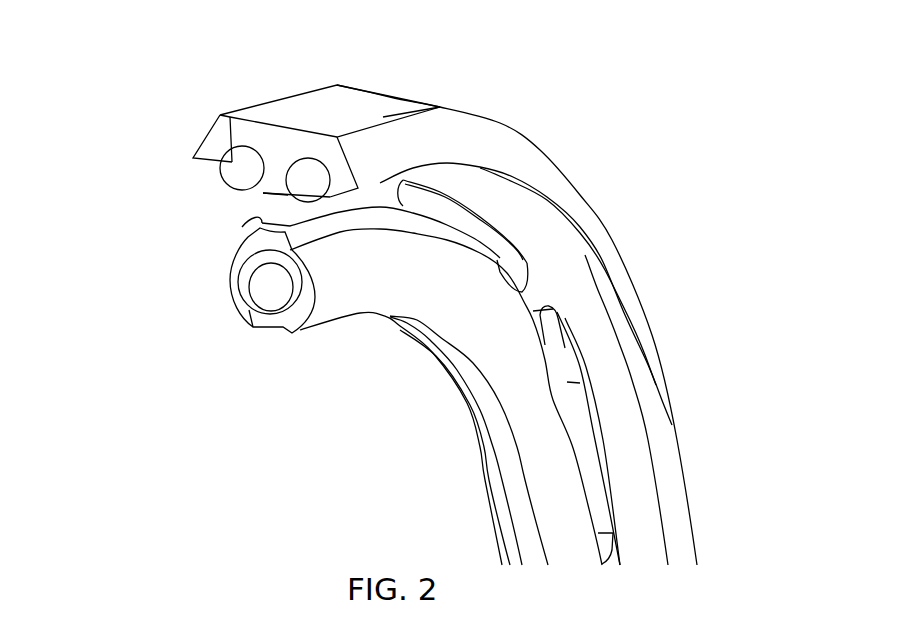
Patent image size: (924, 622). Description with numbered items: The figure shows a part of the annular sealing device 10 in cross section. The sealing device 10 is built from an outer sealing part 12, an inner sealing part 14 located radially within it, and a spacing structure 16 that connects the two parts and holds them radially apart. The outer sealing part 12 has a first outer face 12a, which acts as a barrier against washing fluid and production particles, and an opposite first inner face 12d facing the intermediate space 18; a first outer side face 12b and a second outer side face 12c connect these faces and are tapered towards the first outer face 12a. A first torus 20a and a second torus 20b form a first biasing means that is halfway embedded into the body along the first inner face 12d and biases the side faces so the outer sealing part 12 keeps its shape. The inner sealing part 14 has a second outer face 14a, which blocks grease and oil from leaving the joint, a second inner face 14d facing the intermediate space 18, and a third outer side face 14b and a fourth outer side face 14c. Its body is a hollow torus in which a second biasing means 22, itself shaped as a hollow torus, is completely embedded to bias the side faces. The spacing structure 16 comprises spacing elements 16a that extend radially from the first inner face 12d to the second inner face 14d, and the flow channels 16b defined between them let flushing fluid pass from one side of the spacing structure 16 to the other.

The sealing device 10 is at (598, 207).
The outer sealing part 12 is at (540, 167).
The first outer face 12a is at (302, 100).
The first outer side face 12b is at (206, 121).
The second outer side face 12c is at (410, 133).
The first inner face 12d is at (258, 200).
The inner sealing part 14 is at (347, 300).
The second outer face 14a is at (271, 338).
The third outer side face 14b is at (214, 274).
The fourth outer side face 14c is at (362, 278).
The second inner face 14d is at (260, 214).
The spacing structure 16 is at (533, 311).
The spacing elements 16a is at (385, 196).
The flow channels 16b is at (572, 383).
The intermediate space 18 is at (242, 227).
The first torus 20a is at (238, 160).
The second torus 20b is at (305, 170).
The second biasing means 22 is at (249, 310).